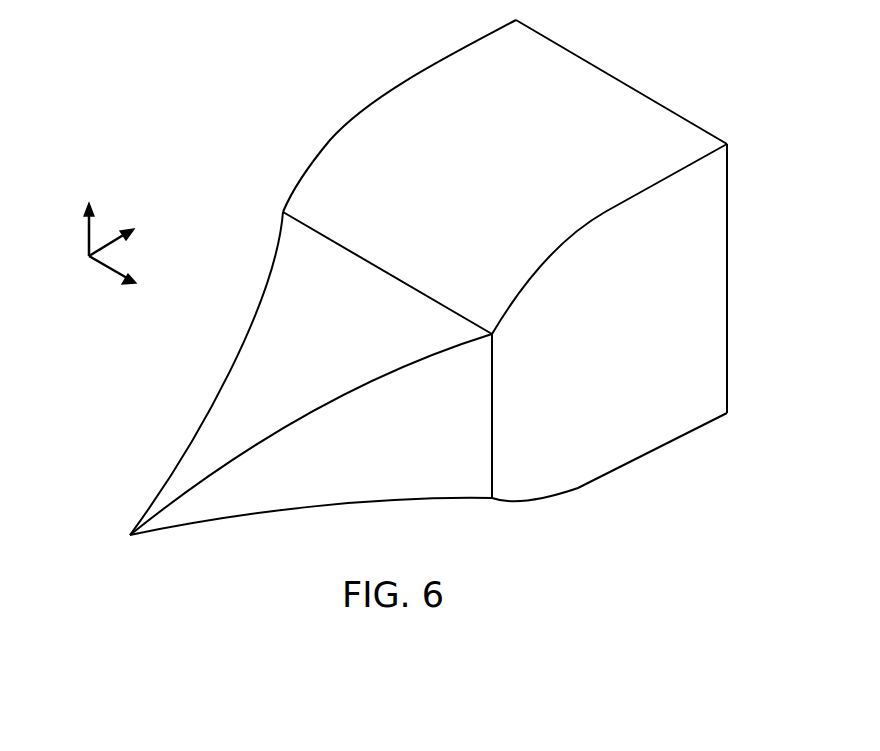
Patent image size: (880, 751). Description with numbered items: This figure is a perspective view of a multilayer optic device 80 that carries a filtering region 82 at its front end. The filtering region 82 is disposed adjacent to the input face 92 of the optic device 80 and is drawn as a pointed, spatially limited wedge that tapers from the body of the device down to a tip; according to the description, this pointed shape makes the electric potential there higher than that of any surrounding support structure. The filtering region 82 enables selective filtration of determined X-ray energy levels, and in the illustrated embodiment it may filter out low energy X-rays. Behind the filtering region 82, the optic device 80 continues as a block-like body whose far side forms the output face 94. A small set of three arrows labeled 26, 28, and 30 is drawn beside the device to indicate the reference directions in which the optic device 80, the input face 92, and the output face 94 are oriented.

The multilayer optic device 80 is at (641, 89).
The filtering region 82 is at (360, 335).
The input face 92 is at (495, 420).
The output face 94 is at (727, 277).
The axial direction 26 is at (107, 271).
The circumferential direction 28 is at (110, 240).
The radial direction 30 is at (87, 231).